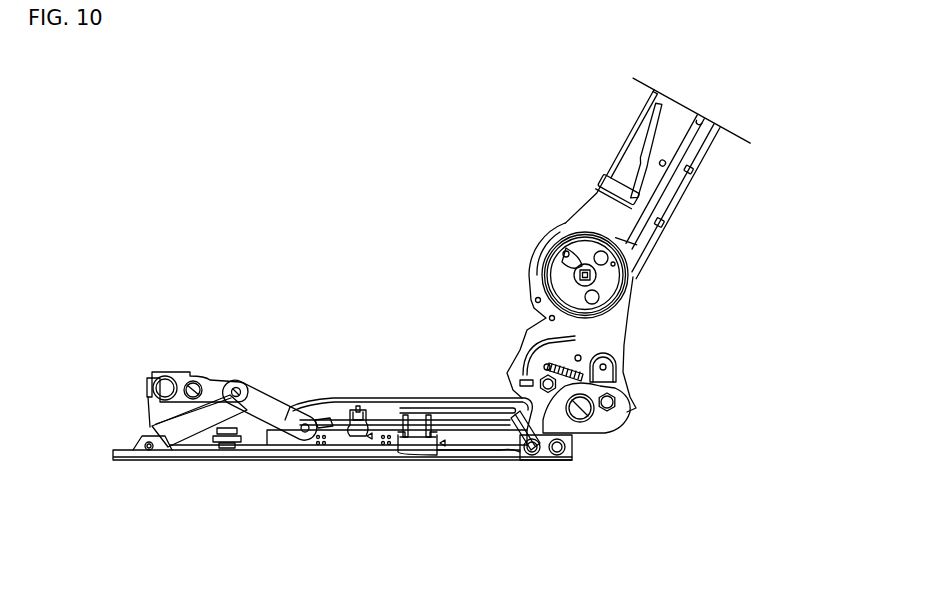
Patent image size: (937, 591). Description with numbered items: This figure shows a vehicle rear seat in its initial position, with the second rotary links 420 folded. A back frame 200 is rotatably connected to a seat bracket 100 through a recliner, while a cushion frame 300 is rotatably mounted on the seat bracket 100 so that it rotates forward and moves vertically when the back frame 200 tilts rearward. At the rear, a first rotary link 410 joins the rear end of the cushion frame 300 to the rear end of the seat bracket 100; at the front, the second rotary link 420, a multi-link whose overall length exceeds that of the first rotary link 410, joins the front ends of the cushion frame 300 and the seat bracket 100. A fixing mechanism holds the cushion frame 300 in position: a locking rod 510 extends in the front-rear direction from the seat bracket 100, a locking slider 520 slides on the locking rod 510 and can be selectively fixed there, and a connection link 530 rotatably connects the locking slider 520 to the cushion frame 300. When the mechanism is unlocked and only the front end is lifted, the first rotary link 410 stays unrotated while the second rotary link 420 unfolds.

The seat bracket 100 is at (453, 453).
The back frame 200 is at (672, 202).
The cushion frame 300 is at (424, 408).
The first rotary link 410 is at (573, 418).
The second rotary link 420 is at (213, 387).
The locking rod 510 is at (277, 438).
The locking slider 520 is at (338, 438).
The connection link 530 is at (270, 410).